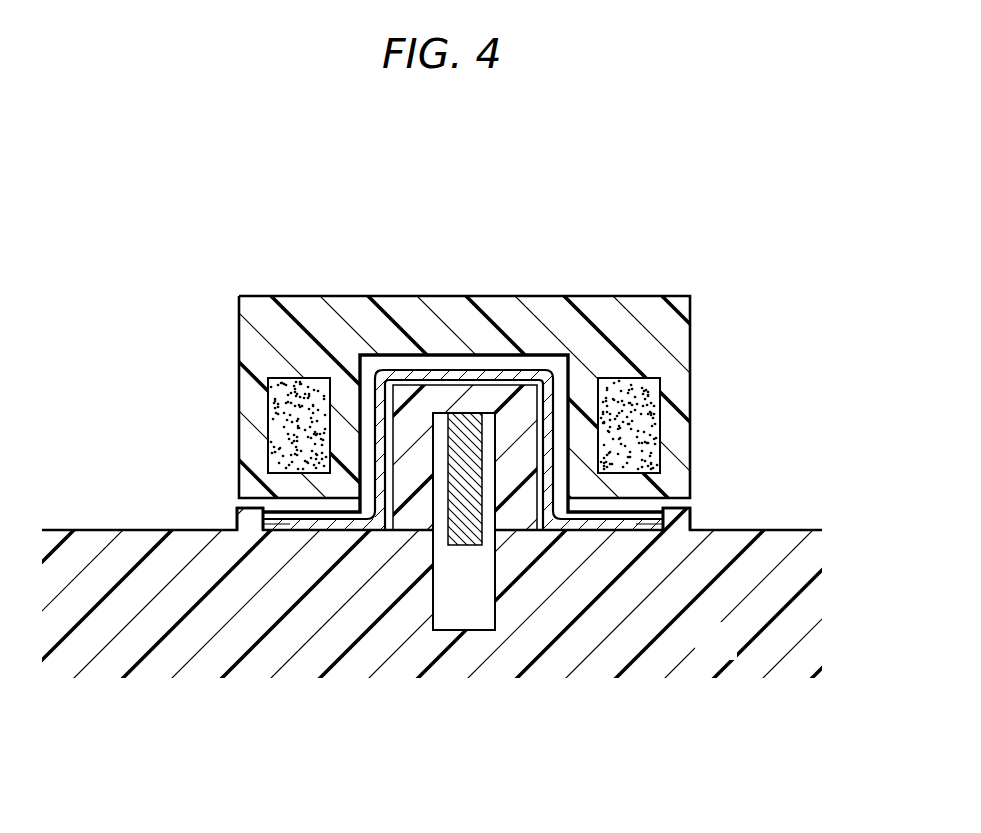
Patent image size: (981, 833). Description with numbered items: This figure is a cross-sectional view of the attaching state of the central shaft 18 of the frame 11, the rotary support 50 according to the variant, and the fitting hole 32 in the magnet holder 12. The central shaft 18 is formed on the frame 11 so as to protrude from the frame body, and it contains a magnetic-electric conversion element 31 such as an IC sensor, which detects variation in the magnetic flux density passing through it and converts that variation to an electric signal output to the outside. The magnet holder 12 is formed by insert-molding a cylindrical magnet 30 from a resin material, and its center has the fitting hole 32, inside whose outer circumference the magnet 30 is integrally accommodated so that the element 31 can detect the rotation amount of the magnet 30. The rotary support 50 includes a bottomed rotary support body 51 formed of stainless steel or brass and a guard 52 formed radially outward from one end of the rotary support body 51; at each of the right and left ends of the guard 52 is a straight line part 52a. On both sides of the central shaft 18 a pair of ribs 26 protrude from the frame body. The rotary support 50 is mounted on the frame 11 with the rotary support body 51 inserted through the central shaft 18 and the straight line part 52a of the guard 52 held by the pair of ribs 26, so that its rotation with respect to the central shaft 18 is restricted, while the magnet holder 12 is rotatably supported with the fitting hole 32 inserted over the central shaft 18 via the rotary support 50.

The frame 11 is at (733, 655).
The magnet holder 12 is at (655, 297).
The central shaft 18 is at (430, 398).
The ribs 26 is at (247, 520).
The magnet 30 is at (637, 411).
The magnetic-electric conversion element 31 is at (459, 540).
The fitting hole 32 is at (563, 402).
The rotary support 50 is at (477, 366).
The rotary support body 51 is at (378, 416).
The guard 52 is at (293, 523).
The straight line part 52a is at (253, 521).